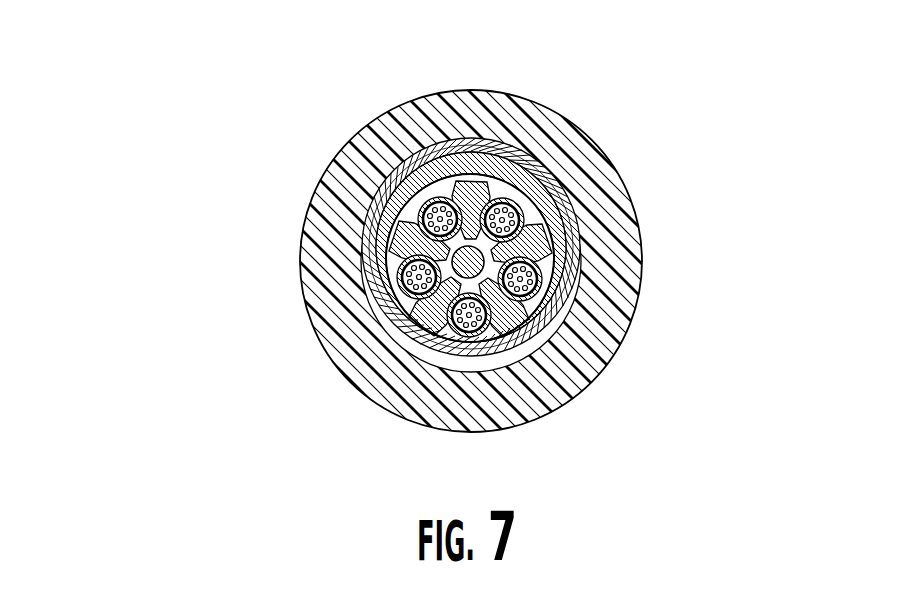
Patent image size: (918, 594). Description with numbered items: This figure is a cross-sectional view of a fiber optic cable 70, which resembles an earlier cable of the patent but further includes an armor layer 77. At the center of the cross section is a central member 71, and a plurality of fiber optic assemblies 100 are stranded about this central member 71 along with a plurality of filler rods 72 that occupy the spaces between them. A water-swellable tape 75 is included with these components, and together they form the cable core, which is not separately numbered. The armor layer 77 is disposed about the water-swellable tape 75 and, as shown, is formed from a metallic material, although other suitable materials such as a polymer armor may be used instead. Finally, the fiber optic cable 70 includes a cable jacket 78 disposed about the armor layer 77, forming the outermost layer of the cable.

The fiber optic cable 70 is at (112, 137).
The central member 71 is at (528, 228).
The filler rods 72 is at (520, 170).
The water-swellable tape 75 is at (410, 414).
The armor layer 77 is at (500, 160).
The cable jacket 78 is at (297, 278).
The fiber optic assemblies 100 is at (387, 181).